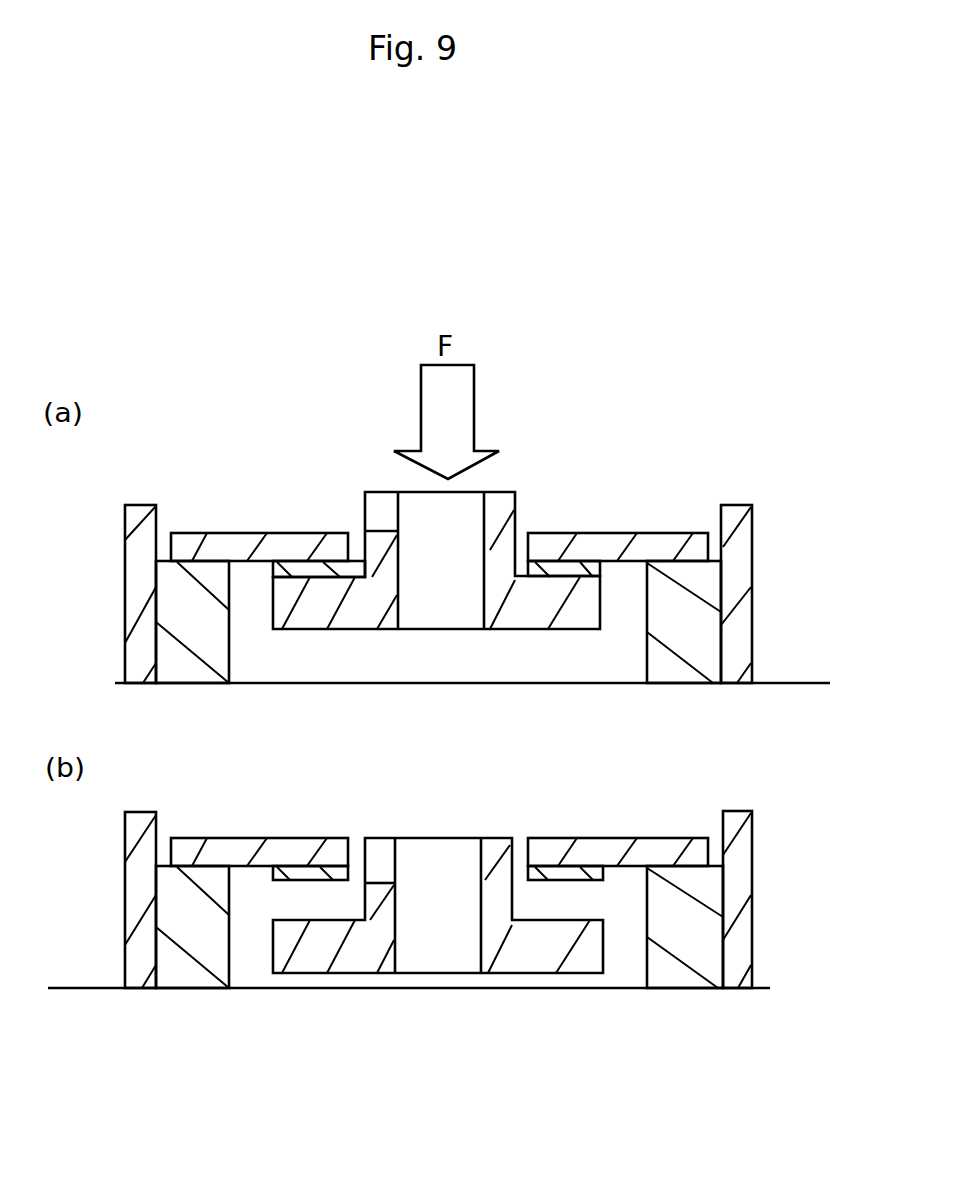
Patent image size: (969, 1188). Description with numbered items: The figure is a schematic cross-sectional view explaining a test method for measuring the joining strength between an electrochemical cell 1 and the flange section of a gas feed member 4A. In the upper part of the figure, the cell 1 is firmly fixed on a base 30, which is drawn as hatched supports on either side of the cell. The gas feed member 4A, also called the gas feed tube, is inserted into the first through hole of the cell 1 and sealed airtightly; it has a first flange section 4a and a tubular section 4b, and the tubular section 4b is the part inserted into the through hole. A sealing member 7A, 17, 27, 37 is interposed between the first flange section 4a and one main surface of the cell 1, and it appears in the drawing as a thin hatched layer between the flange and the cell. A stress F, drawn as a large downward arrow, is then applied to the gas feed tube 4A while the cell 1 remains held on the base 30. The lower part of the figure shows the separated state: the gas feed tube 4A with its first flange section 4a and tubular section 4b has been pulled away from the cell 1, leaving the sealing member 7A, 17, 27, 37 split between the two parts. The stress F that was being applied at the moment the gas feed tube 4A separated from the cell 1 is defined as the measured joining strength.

The electrochemical cell 1 is at (201, 544).
The sealing member 7A is at (419, 645).
The thin sheet / shim 17 is at (419, 645).
The thin sheet / shim 27 is at (419, 645).
The thin sheet / shim 37 is at (287, 564).
The gas feed member 4A is at (438, 737).
The first flange section 4a is at (308, 620).
The tubular section 4b is at (373, 547).
The base 30 is at (205, 677).